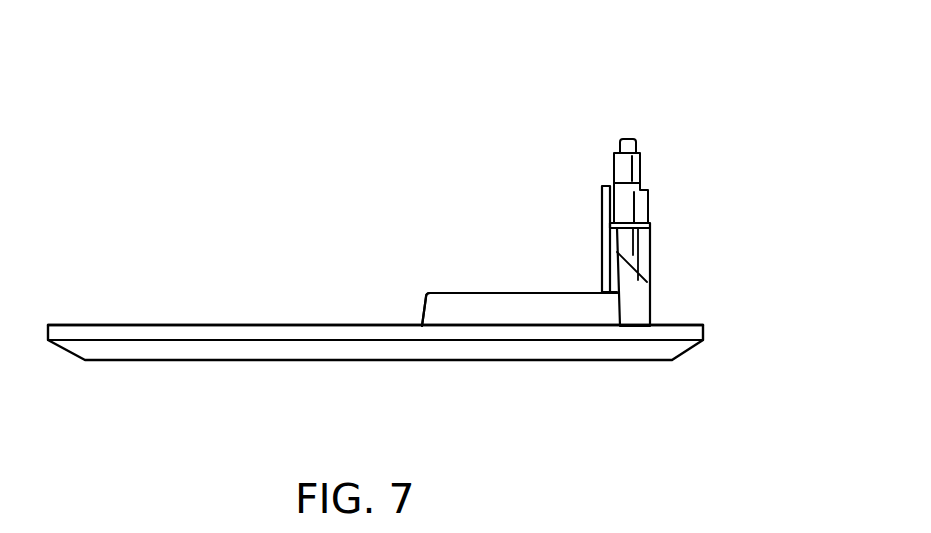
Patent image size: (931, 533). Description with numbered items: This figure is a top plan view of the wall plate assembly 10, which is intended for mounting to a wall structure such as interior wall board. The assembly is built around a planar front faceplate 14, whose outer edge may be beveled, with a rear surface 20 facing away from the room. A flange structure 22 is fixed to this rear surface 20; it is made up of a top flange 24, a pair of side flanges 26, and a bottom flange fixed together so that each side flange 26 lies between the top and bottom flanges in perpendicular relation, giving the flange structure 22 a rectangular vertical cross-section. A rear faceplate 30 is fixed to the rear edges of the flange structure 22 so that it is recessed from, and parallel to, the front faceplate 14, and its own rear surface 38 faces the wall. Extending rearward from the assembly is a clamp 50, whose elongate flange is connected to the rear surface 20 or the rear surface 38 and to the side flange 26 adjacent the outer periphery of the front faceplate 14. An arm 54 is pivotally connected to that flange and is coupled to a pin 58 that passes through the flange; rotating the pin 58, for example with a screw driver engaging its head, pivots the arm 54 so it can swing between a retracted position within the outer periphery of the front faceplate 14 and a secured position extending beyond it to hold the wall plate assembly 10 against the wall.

The wall plate assembly 10 is at (562, 361).
The front faceplate 14 is at (182, 362).
The rear surface 20 is at (138, 324).
The flange structure 22 is at (476, 293).
The top flange 24 is at (535, 308).
The side flange 26 is at (423, 298).
The rear faceplate 30 is at (440, 293).
The rear surface 38 is at (579, 292).
The clamp 50 is at (653, 244).
The arm 54 is at (618, 193).
The pin 58 is at (628, 138).